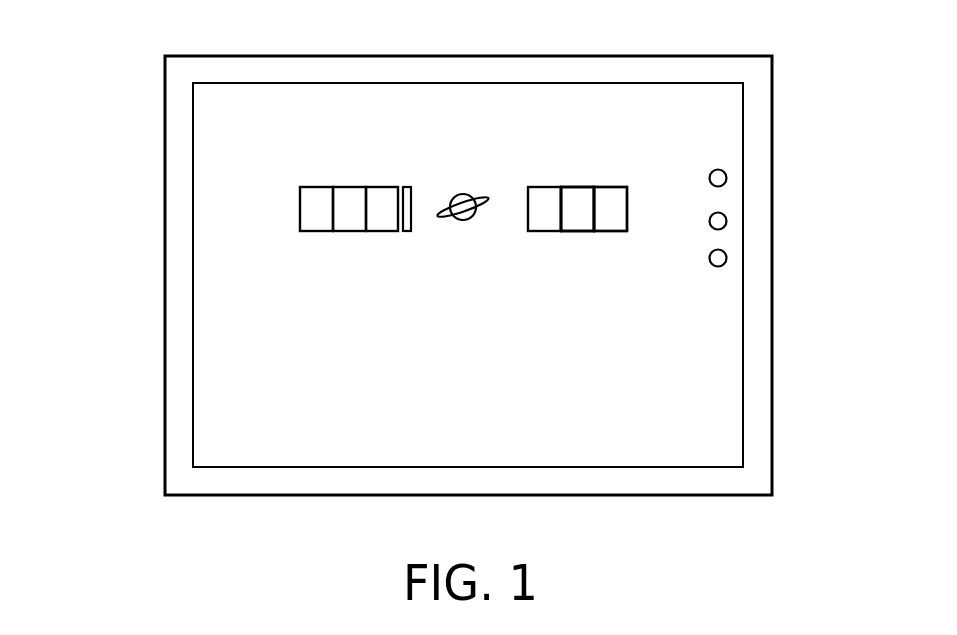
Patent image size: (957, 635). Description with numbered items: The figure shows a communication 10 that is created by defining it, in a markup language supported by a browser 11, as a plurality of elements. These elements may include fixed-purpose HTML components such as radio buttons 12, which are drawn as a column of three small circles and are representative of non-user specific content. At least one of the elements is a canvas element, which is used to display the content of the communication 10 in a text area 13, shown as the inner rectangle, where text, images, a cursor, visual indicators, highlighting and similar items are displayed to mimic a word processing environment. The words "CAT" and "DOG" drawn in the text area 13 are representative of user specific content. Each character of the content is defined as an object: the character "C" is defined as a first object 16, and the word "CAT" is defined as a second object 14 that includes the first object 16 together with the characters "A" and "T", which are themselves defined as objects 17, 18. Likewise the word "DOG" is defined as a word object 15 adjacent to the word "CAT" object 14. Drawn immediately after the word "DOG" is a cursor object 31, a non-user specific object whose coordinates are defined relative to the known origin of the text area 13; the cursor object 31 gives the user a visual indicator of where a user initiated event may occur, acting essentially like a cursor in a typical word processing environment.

The communication 10 is at (140, 283).
The browser 11 is at (773, 102).
The radio buttons 12 is at (727, 180).
The text area 13 is at (744, 313).
The second object 14 is at (580, 175).
The word "DOG" object 15 is at (305, 172).
The first object 16 is at (527, 200).
The object 17 is at (588, 186).
The object 18 is at (615, 186).
The cursor object 31 is at (405, 186).